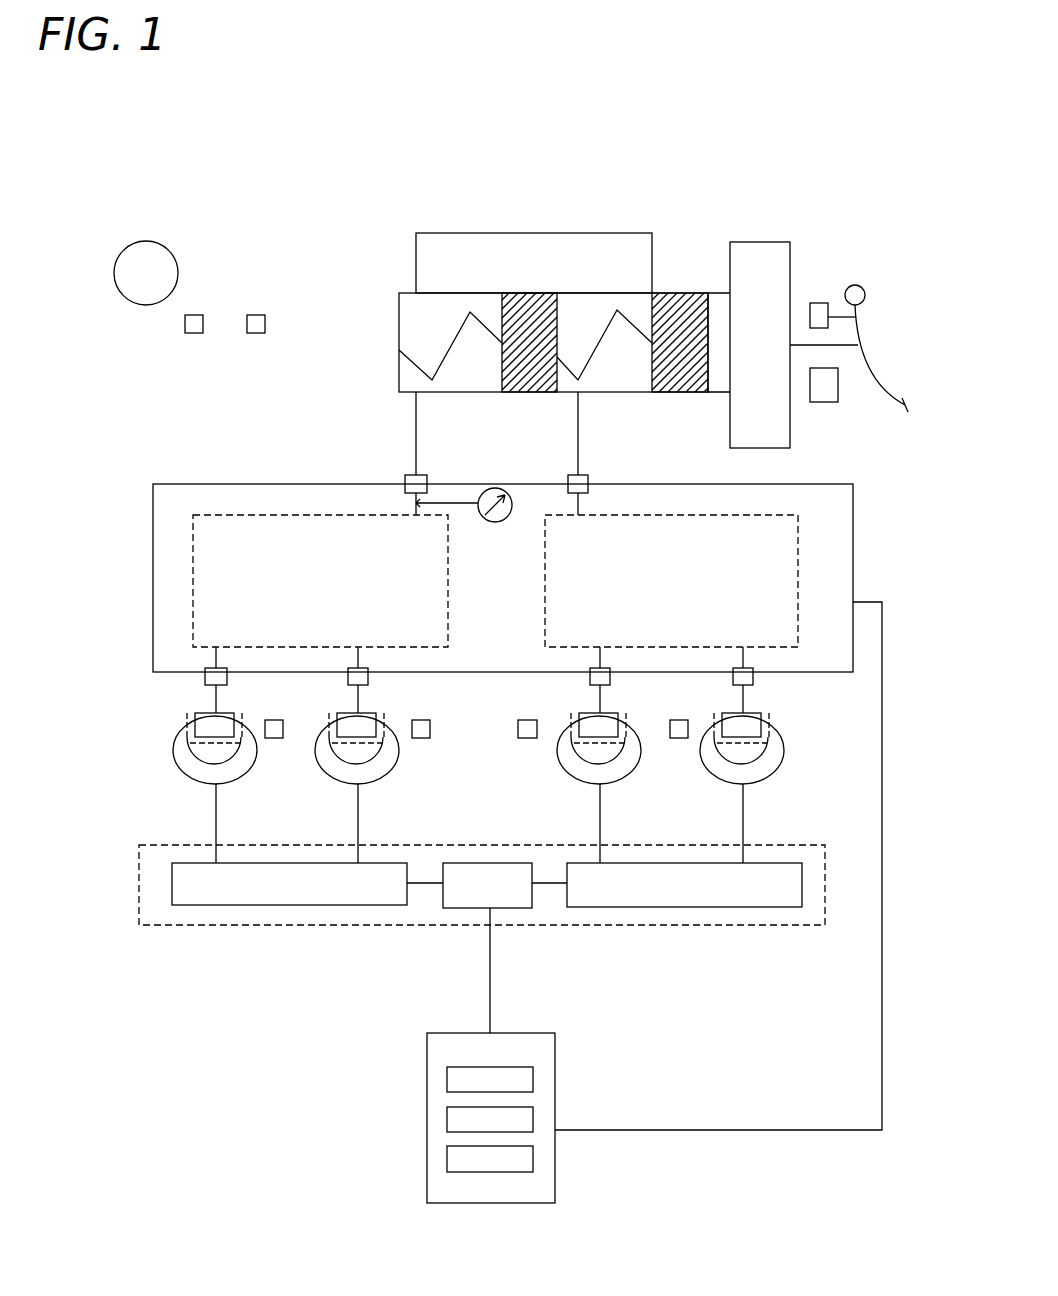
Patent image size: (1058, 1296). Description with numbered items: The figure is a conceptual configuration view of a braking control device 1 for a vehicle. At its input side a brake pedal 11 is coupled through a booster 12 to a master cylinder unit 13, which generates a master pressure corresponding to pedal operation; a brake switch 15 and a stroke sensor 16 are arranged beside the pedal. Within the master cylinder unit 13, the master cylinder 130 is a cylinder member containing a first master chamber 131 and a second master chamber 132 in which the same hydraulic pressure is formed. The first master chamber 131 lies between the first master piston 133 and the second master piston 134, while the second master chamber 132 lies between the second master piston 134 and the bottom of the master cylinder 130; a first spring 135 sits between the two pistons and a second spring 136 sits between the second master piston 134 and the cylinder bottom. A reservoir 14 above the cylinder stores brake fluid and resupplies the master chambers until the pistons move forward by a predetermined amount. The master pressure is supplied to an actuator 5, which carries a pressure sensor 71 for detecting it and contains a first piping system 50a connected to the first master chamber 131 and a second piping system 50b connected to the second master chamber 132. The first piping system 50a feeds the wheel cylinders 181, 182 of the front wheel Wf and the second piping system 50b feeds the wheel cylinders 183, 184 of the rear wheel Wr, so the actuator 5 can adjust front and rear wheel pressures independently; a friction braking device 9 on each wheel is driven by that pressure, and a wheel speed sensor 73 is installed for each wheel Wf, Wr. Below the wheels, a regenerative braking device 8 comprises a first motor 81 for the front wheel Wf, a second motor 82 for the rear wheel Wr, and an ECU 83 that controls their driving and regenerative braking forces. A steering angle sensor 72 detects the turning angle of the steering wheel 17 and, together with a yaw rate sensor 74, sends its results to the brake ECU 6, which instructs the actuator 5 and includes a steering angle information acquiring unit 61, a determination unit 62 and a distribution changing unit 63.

The braking control device 1 is at (180, 162).
The actuator 5 is at (513, 552).
The brake ECU 6 is at (627, 902).
The regenerative braking device 8 is at (454, 906).
The friction braking device 9 is at (243, 725).
The brake pedal 11 is at (870, 373).
The booster 12 is at (760, 250).
The master cylinder unit 13 is at (555, 311).
The reservoir 14 is at (497, 250).
The brake switch 15 is at (818, 303).
The stroke sensor 16 is at (818, 402).
The steering wheel 17 is at (180, 273).
The first piping system 50a is at (798, 553).
The second piping system 50b is at (193, 563).
The steering angle information acquiring unit 61 is at (457, 1078).
The determination unit 62 is at (457, 1117).
The distribution changing unit 63 is at (457, 1157).
The pressure sensor 71 is at (483, 522).
The steering angle sensor 72 is at (185, 322).
The wheel speed sensor 73 is at (277, 738).
The yaw rate sensor 74 is at (247, 322).
The first motor 81 is at (713, 907).
The second motor 82 is at (217, 905).
The ECU 83 is at (467, 908).
The master cylinder 130 is at (399, 300).
The first master chamber 131 is at (618, 377).
The second master chamber 132 is at (408, 378).
The first master piston 133 is at (688, 307).
The second master piston 134 is at (530, 380).
The first spring 135 is at (617, 310).
The second spring 136 is at (447, 345).
The wheel cylinder 181 is at (733, 713).
The wheel cylinder 182 is at (587, 713).
The wheel cylinder 183 is at (343, 713).
The wheel cylinder 184 is at (207, 713).
The front wheel Wf is at (577, 782).
The rear wheel Wr is at (177, 772).